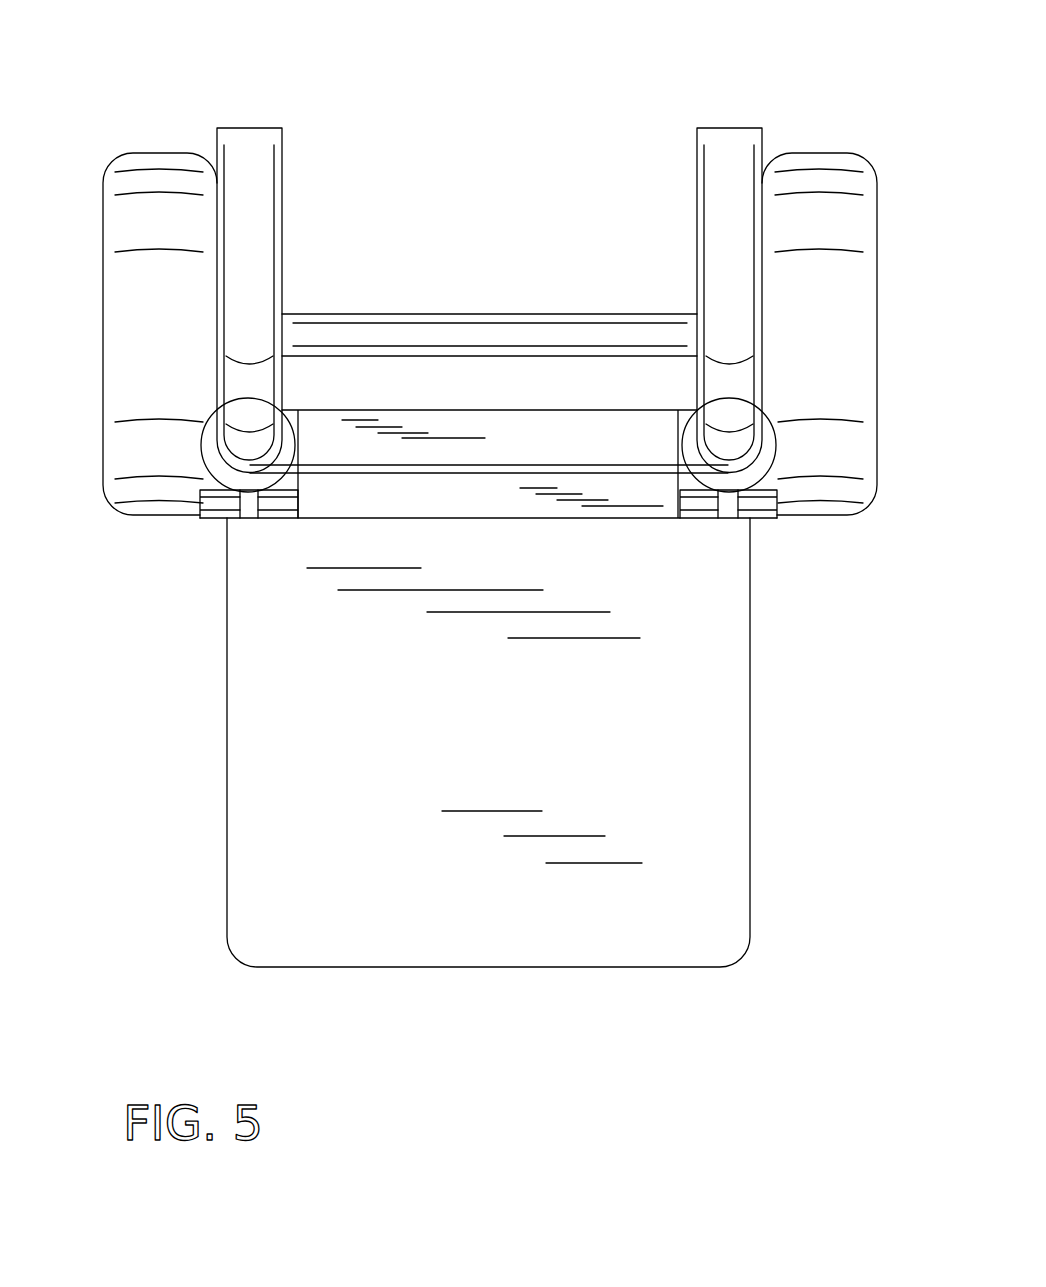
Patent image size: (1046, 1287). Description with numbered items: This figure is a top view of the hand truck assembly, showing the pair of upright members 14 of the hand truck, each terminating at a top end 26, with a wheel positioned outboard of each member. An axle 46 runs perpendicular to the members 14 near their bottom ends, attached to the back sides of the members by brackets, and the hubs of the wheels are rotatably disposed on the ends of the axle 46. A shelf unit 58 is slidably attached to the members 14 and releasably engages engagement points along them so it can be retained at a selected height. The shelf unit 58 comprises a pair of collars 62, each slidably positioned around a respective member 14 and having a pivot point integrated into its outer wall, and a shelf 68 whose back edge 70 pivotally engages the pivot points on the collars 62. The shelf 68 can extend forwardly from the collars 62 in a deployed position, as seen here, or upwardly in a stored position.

The member 14 is at (283, 211).
The top end 26 is at (250, 128).
The axle 46 is at (501, 314).
The shelf unit 58 is at (208, 537).
The collar 62 is at (201, 447).
The shelf 68 is at (227, 787).
The back edge 70 is at (683, 520).